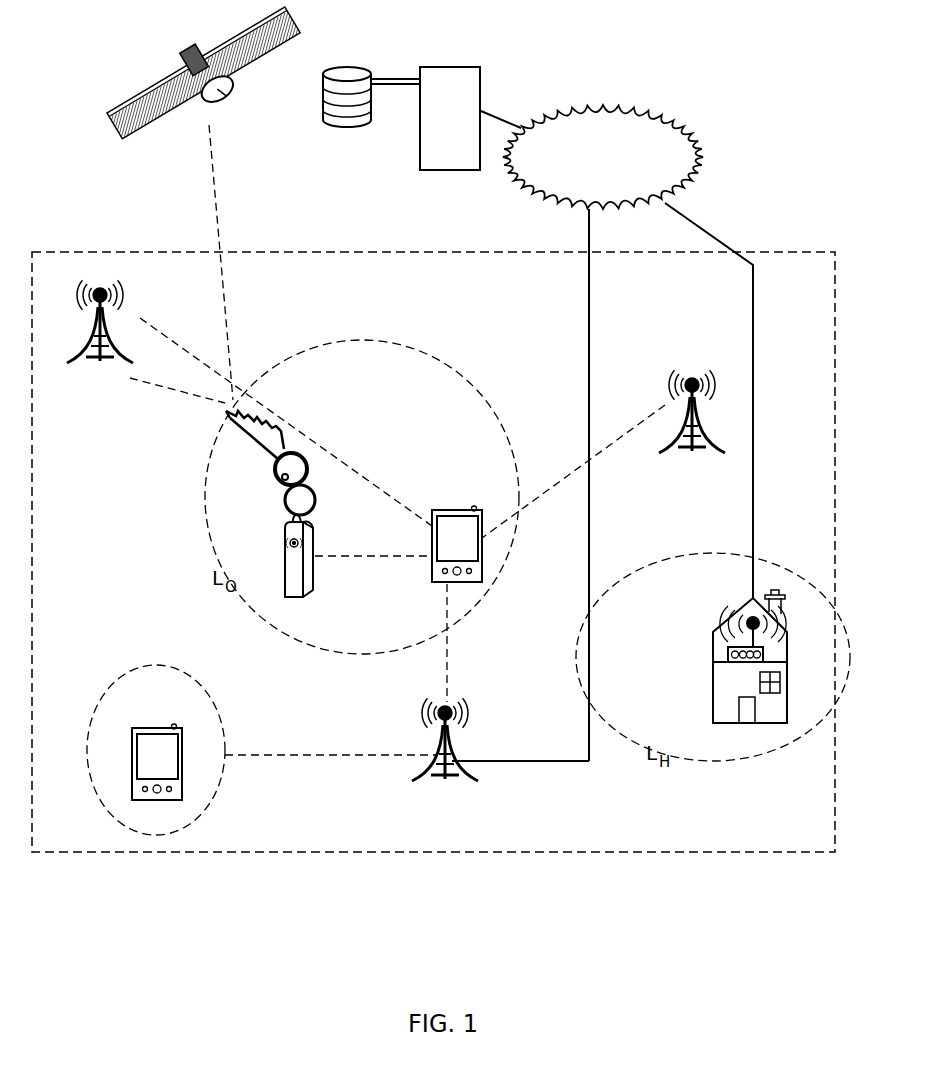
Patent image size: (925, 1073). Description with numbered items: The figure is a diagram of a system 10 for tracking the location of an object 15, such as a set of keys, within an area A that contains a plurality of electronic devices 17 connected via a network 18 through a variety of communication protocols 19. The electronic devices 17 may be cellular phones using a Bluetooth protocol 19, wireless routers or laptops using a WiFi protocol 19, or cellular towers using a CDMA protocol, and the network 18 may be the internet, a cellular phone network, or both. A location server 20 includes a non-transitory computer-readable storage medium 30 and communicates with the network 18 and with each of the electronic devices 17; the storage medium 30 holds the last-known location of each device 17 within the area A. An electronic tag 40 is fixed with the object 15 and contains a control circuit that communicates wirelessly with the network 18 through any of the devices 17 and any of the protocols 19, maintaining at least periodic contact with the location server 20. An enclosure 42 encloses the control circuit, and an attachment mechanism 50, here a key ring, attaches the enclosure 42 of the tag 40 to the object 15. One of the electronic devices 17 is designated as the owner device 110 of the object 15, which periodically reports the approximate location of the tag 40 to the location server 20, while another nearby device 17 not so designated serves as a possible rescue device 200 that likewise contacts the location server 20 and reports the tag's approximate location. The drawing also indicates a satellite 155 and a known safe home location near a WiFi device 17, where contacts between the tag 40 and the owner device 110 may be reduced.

The system 10 is at (682, 67).
The satellite 155 is at (173, 97).
The location server 20 is at (456, 72).
The non-transitory computer-readable storage medium 30 is at (353, 125).
The network 18 is at (667, 114).
The electronic devices 17 is at (104, 367).
The communication protocols 19 is at (221, 259).
The object 15 is at (296, 456).
The attachment mechanism 50 is at (312, 487).
The electronic tag 40 is at (303, 539).
The enclosure 42 is at (308, 566).
The owner device 110 is at (440, 486).
The possible rescue device 200 is at (173, 724).
The area A is at (664, 855).